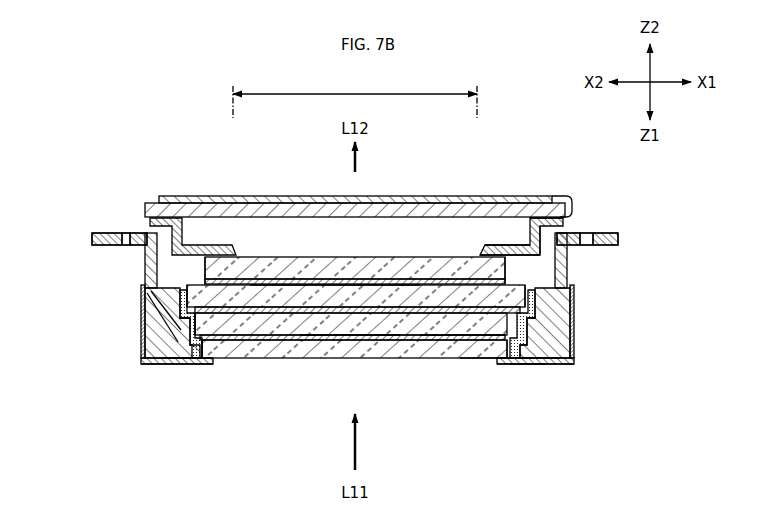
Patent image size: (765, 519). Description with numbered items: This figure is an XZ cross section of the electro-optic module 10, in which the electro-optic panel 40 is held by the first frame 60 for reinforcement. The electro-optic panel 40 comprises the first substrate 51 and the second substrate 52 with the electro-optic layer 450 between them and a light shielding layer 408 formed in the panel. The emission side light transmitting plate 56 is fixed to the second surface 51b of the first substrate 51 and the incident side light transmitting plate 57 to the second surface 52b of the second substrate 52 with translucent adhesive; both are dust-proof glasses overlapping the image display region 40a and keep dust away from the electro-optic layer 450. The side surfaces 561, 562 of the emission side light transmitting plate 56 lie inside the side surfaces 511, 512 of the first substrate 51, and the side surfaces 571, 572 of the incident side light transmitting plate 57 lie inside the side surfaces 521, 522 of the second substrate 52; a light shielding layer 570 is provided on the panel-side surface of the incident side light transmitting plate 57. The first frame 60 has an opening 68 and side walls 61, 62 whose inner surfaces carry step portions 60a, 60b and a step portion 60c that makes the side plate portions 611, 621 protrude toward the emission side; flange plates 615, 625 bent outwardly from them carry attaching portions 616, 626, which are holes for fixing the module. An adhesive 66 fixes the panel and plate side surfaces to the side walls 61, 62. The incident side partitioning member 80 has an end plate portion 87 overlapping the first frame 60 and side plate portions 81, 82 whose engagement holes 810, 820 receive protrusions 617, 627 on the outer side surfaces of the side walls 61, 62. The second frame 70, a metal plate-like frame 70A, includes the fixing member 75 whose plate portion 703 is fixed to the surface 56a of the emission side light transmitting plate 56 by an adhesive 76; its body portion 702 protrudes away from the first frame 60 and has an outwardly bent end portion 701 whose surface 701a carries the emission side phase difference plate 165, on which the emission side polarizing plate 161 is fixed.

The electro-optic module 10 is at (587, 190).
The electro-optic panel 40 is at (359, 343).
The image display region 40a is at (355, 92).
The first substrate 51 is at (359, 327).
The second surface of the first substrate 51b is at (333, 280).
The side surface of the first substrate 511 is at (540, 302).
The side surface of the first substrate 512 is at (187, 296).
The second substrate 52 is at (351, 371).
The second surface of the second substrate 52b is at (347, 330).
The side surface of the second substrate 521 is at (465, 320).
The side surface of the second substrate 522 is at (200, 337).
The emission side light transmitting plate 56 is at (349, 322).
The surface of the emission side light transmitting plate 56a is at (378, 257).
The side surface of the emission side light transmitting plate 561 is at (507, 268).
The side surface of the emission side light transmitting plate 562 is at (197, 270).
The incident side light transmitting plate 57 is at (380, 400).
The light shielding layer 570 is at (488, 350).
The side surface of the incident side light transmitting plate 571 is at (535, 361).
The side surface of the incident side light transmitting plate 572 is at (196, 357).
The first frame 60 is at (356, 328).
The step portion 60a is at (180, 365).
The step portion 60b is at (165, 366).
The step portion 60c is at (142, 287).
The side wall 61 is at (600, 285).
The side plate portion 611 is at (562, 272).
The flange plate 615 is at (620, 239).
The attaching portion 616 is at (598, 240).
The protrusion 617 is at (567, 320).
The side wall 62 is at (115, 287).
The side plate portion 621 is at (150, 262).
The flange plate 625 is at (93, 239).
The attaching portion 626 is at (133, 232).
The protrusion 627 is at (162, 312).
The adhesive 66 is at (162, 344).
The opening 68 is at (213, 364).
The second frame 70 is at (384, 192).
The plate-like frame 70A is at (384, 204).
The end portion 701 is at (556, 222).
The surface of the end portion 701a is at (568, 206).
The body portion 702 is at (528, 236).
The plate portion 703 is at (478, 206).
The fixing member 75 is at (551, 233).
The adhesive 76 is at (470, 222).
The incident side partitioning member 80 is at (535, 409).
The side plate portion 81 is at (589, 331).
The engagement hole 810 is at (560, 340).
The side plate portion 82 is at (120, 324).
The engagement hole 820 is at (183, 322).
The end plate portion 87 is at (525, 365).
The emission side polarizing plate 161 is at (358, 179).
The emission side phase difference plate 165 is at (275, 207).
The light shielding layer 408 is at (240, 300).
The electro-optic layer 450 is at (318, 342).